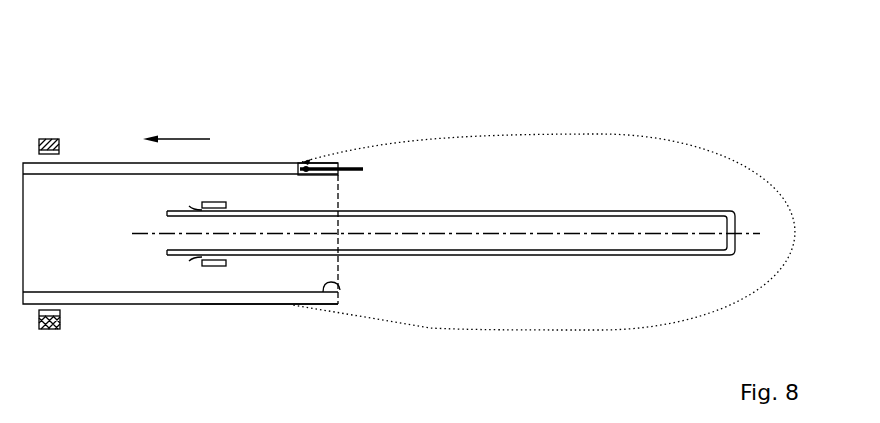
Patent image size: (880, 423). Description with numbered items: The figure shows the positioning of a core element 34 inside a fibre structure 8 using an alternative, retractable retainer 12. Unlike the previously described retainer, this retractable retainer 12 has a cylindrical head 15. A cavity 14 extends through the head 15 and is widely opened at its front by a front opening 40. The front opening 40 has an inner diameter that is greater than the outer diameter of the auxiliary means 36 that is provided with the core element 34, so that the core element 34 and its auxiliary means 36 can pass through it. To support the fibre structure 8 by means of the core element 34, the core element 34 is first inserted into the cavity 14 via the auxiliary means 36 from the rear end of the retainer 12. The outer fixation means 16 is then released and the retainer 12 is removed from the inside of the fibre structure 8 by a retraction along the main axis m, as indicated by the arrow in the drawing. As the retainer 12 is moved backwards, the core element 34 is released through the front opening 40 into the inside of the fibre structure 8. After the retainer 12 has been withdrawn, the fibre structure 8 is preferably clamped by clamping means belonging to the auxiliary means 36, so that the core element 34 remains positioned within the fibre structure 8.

The retractable retainer 12 is at (98, 305).
The cavity 14 is at (139, 270).
The cylindrical head 15 is at (280, 297).
The outer fixation means 16 is at (48, 328).
The core element 34 is at (412, 208).
The auxiliary means 36 is at (179, 210).
The front opening 40 is at (340, 290).
The fibre structure 8 is at (628, 138).
The main axis m is at (748, 233).